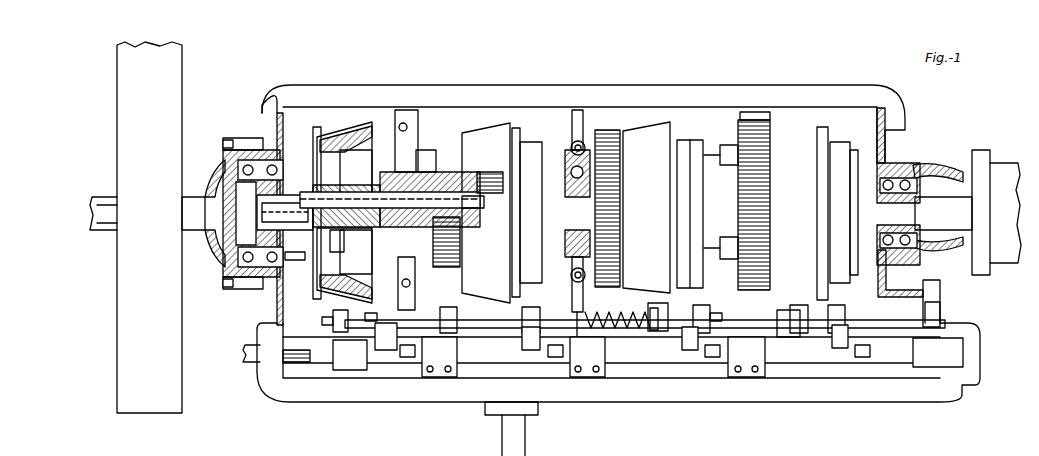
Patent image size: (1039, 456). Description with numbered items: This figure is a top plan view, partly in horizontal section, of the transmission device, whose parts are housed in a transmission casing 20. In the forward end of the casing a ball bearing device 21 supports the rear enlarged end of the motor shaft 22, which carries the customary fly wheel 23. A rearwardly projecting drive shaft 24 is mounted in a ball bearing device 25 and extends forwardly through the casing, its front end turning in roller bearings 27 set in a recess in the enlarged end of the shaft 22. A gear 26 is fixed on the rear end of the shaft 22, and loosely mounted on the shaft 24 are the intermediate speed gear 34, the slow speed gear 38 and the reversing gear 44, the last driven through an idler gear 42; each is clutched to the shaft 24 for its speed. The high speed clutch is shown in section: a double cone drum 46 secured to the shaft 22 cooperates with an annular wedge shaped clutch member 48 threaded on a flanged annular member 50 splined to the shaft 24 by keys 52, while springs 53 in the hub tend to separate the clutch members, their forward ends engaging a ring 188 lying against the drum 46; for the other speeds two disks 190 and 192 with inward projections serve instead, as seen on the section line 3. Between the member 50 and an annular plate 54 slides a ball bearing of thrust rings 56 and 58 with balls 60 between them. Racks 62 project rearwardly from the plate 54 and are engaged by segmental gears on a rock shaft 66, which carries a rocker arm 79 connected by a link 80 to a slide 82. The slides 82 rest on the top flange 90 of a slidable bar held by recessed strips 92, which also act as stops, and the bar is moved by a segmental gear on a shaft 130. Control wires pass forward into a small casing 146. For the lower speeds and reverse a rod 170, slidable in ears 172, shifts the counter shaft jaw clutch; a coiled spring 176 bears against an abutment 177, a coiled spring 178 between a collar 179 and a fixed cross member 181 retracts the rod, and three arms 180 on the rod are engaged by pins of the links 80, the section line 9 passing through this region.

The transmission casing 20 is at (895, 105).
The ball bearing device 21 is at (240, 172).
The motor shaft 22 is at (203, 230).
The fly wheel 23 is at (175, 364).
The drive shaft 24 is at (222, 255).
The ball bearing device 25 is at (905, 170).
The gear 26 is at (298, 172).
The roller bearings 27 is at (295, 260).
The intermediate speed gear 34 is at (425, 152).
The slow speed gear 38 is at (605, 135).
The idler gear 42 is at (775, 118).
The reversing gear 44 is at (755, 125).
The drum 46 is at (322, 137).
The annular wedge shaped clutch member 48 is at (360, 124).
The flanged annular member 50 is at (368, 168).
The keys 52 is at (292, 212).
The springs 53 is at (484, 210).
The annular plate 54 is at (412, 160).
The thrust ring 56 is at (395, 292).
The thrust ring 58 is at (415, 282).
The balls 60 is at (395, 286).
The racks 62 is at (480, 172).
The rock shaft 66 is at (412, 300).
The rocker arm 79 is at (928, 323).
The link 80 is at (386, 345).
The slide 82 is at (388, 352).
The flange 90 is at (333, 356).
The recessed strips 92 is at (440, 377).
The shaft 130 is at (502, 445).
The small casing 146 is at (251, 362).
The rod 170 is at (322, 321).
The ears 172 is at (333, 313).
The coiled spring 176 is at (437, 354).
The abutment 177 is at (458, 335).
The coiled spring 178 is at (618, 330).
The collar 179 is at (655, 333).
The arms 180 is at (520, 316).
The fixed cross member 181 is at (582, 300).
The ring 188 is at (316, 146).
The disk 190 is at (500, 172).
The disk 192 is at (504, 182).
The section line 3— 3 is at (470, 137).
The section line 9— 9 is at (762, 290).